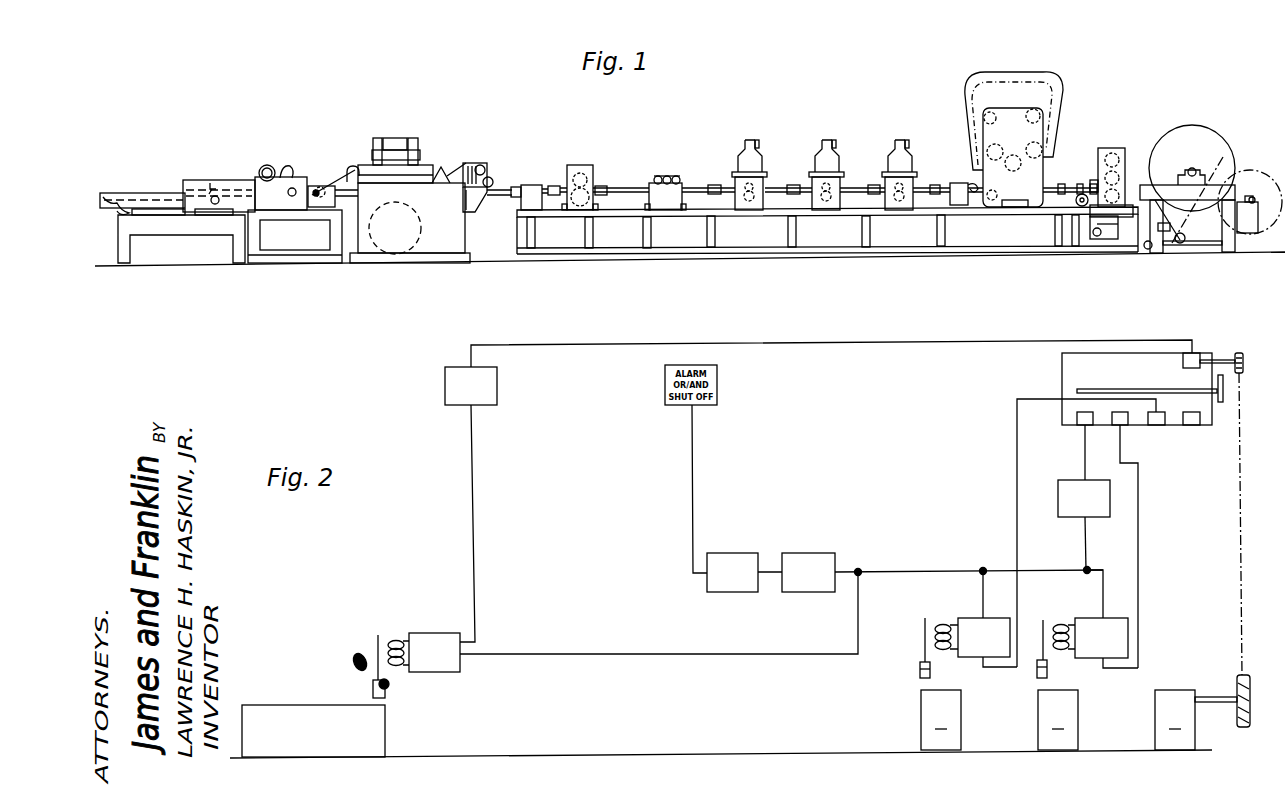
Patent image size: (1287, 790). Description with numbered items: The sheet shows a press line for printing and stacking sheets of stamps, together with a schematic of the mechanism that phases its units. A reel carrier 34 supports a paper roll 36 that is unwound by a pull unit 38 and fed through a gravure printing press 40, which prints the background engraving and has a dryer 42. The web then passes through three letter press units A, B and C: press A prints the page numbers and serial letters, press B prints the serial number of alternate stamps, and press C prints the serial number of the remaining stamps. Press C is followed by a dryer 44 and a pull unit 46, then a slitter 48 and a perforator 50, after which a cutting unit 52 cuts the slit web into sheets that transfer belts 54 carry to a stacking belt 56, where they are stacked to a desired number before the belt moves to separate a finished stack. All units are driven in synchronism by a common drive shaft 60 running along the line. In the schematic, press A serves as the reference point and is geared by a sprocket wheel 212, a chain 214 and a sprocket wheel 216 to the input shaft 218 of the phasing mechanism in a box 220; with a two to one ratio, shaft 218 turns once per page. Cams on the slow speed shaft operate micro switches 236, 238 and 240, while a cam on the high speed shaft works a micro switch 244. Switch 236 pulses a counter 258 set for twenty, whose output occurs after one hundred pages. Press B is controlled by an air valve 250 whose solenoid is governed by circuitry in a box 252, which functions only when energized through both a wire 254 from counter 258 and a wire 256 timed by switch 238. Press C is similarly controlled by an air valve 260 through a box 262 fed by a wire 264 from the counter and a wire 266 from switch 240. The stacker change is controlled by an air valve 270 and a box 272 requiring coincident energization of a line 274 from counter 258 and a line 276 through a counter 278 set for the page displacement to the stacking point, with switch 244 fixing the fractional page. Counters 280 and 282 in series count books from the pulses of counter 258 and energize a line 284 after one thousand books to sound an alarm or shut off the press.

In FIG. 1, the reel carrier 34 is at (1160, 185).
In FIG. 1, the paper roll 36 is at (1203, 140).
In FIG. 1, the pull unit 38 is at (1112, 148).
In FIG. 1, the gravure printing press 40 is at (1043, 162).
In FIG. 1, the dryer 42 is at (1005, 72).
In FIG. 1, the dryer 44 is at (663, 183).
In FIG. 1, the pull unit 46 is at (584, 165).
In FIG. 1, the slitter 48 is at (480, 163).
In FIG. 1, the perforator 50 is at (398, 138).
In FIG. 1, the cutting unit 52 is at (272, 165).
In FIG. 1, the transfer belts 54 is at (224, 180).
In FIG. 1, the stacking belt 56 is at (158, 190).
In FIG. 1, the common drive shaft 60 is at (500, 190).
In FIG. 1, the first letter press unit A is at (898, 140).
In FIG. 2, the first letter press unit A is at (1175, 720).
In FIG. 1, the second letter press unit B is at (825, 140).
In FIG. 2, the second letter press unit B is at (1058, 720).
In FIG. 1, the third letter press unit C is at (750, 140).
In FIG. 2, the third letter press unit C is at (941, 720).
In FIG. 2, the sprocket wheel 212 is at (1237, 690).
In FIG. 2, the chain 214 is at (1232, 588).
In FIG. 2, the sprocket wheel 216 is at (1243, 360).
In FIG. 2, the input shaft 218 is at (1218, 359).
In FIG. 2, the box 220 is at (1147, 381).
In FIG. 2, the micro switch 236 is at (1079, 428).
In FIG. 2, the micro switch 238 is at (1118, 428).
In FIG. 2, the micro switch 240 is at (1155, 427).
In FIG. 2, the micro switch 244 is at (1191, 352).
In FIG. 2, the air valve 250 is at (1047, 672).
In FIG. 2, the box 252 is at (1085, 618).
In FIG. 2, the wire 254 is at (1108, 594).
In FIG. 2, the wire 256 is at (1129, 668).
In FIG. 2, the counter 258 is at (1097, 518).
In FIG. 2, the air valve 260 is at (920, 672).
In FIG. 2, the box 262 is at (965, 618).
In FIG. 2, the wire 264 is at (996, 594).
In FIG. 2, the wire 266 is at (1004, 667).
In FIG. 2, the air valve 270 is at (386, 694).
In FIG. 2, the box 272 is at (428, 633).
In FIG. 2, the line 274 is at (523, 654).
In FIG. 2, the line 276 is at (475, 572).
In FIG. 2, the counter 278 is at (497, 396).
In FIG. 2, the counter 280 is at (812, 592).
In FIG. 2, the counter 282 is at (735, 592).
In FIG. 2, the line 284 is at (693, 476).